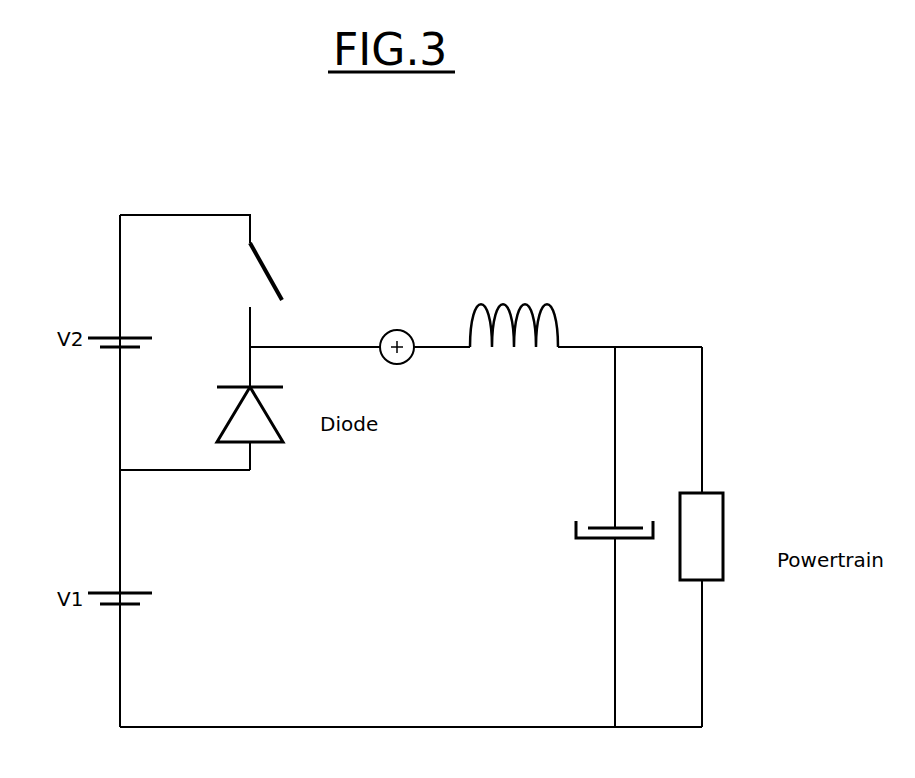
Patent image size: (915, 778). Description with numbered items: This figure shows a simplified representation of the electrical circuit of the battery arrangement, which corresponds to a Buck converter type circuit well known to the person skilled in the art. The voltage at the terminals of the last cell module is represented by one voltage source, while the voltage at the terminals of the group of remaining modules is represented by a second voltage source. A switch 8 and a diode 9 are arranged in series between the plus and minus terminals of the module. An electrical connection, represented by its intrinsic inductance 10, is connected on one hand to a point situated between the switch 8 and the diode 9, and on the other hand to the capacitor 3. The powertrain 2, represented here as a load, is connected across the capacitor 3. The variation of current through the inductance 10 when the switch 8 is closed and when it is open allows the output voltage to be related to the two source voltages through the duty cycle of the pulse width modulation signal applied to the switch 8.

The switch 8 is at (268, 270).
The diode 9 is at (270, 411).
The intrinsic inductance 10 is at (503, 302).
The capacitor 3 is at (572, 525).
The powertrain 2 is at (725, 538).